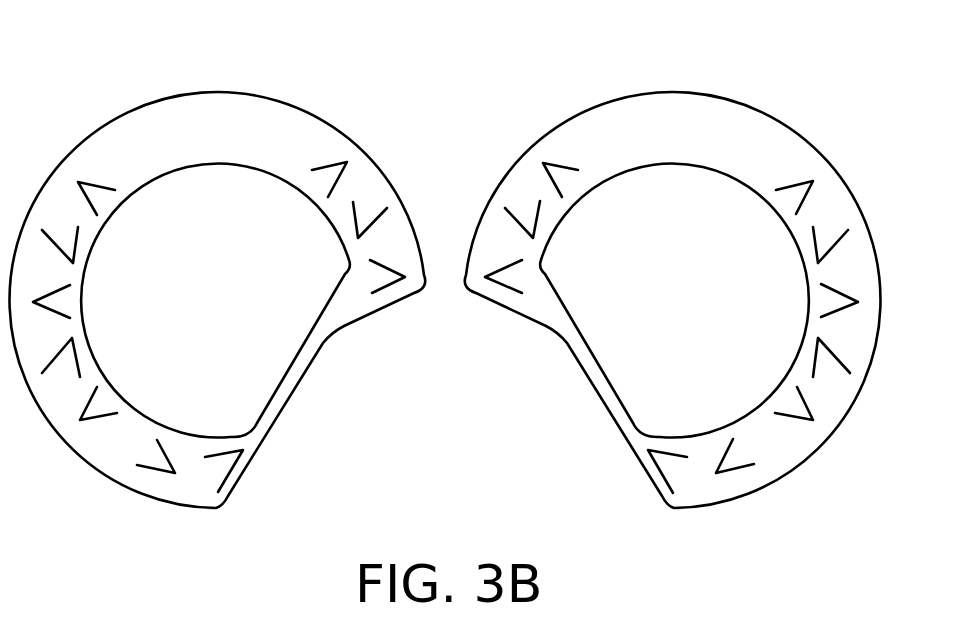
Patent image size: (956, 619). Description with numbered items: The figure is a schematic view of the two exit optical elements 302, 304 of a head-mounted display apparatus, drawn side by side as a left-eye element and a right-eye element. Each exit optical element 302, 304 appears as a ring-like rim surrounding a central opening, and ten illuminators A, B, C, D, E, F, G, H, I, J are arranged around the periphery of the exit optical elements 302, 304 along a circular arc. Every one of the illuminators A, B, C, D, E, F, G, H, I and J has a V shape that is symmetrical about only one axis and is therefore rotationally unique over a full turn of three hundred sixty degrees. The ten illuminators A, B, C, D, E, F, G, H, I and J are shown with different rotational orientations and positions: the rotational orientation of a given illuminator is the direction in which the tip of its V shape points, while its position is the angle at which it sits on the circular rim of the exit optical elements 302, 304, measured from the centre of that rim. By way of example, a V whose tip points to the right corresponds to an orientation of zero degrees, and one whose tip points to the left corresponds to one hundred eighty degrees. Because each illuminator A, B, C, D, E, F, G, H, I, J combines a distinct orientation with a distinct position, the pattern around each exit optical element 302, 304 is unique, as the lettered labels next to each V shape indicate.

The exit optical element 302 is at (193, 113).
The exit optical element 304 is at (703, 113).
The illuminator A is at (509, 363).
The illuminator B is at (484, 382).
The illuminator C is at (450, 384).
The illuminator D is at (414, 383).
The illuminator E is at (386, 364).
The illuminator F is at (339, 268).
The illuminator G is at (351, 235).
The illuminator H is at (450, 214).
The illuminator I is at (548, 238).
The illuminator J is at (554, 272).